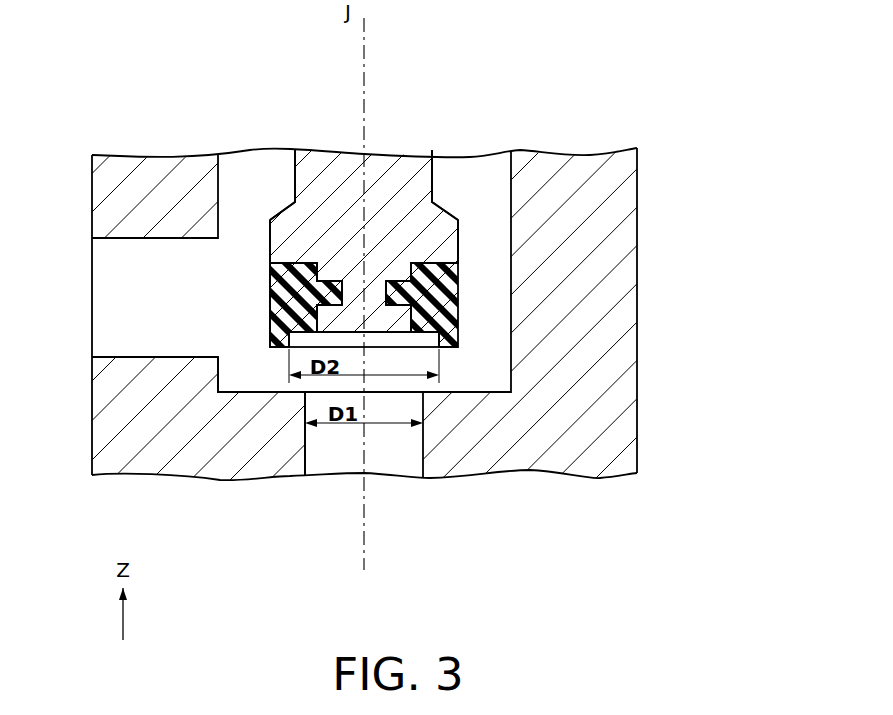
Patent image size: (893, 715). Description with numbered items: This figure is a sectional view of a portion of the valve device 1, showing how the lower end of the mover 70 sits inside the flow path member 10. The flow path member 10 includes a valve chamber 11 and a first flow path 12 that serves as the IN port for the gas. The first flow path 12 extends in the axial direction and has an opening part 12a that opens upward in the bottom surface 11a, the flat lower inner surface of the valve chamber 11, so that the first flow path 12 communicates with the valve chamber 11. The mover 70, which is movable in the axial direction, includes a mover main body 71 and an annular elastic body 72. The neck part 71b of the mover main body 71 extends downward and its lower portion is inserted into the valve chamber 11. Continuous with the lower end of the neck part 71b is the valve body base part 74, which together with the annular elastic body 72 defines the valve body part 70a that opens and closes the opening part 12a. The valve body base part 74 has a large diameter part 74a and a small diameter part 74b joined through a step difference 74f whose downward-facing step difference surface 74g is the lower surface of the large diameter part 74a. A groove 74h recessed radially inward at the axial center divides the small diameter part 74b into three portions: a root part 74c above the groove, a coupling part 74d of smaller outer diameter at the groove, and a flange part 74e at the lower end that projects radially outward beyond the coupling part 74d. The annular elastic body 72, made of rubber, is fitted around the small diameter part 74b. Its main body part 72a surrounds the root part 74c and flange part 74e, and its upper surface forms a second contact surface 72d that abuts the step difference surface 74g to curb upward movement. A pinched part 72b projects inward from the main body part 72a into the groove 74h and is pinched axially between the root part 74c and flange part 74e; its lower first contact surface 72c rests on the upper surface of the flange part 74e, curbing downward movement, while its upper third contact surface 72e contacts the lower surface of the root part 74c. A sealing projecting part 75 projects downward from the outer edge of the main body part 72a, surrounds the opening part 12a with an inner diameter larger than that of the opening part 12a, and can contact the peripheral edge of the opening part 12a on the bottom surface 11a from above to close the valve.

The valve device 1 is at (600, 70).
The flow path member 10 is at (641, 165).
The valve chamber 11 is at (511, 208).
The bottom surface 11a is at (257, 392).
The first flow path 12 is at (423, 472).
The opening part 12a is at (305, 416).
The mover 70 is at (272, 166).
The valve body part 70a is at (400, 293).
The mover main body 71 is at (426, 152).
The neck part 71b is at (432, 183).
The annular elastic body 72 is at (461, 320).
The main body part 72a is at (425, 261).
The pinched part 72b is at (397, 285).
The first contact surface 72c is at (270, 342).
The second contact surface 72d is at (295, 261).
The third contact surface 72e is at (333, 279).
The valve body base part 74 is at (683, 225).
The large diameter part 74a is at (444, 251).
The small diameter part 74b is at (412, 315).
The root part 74c is at (272, 287).
The coupling part 74d is at (270, 321).
The flange part 74e is at (398, 324).
The step difference 74f is at (258, 264).
The step difference surface 74g is at (275, 266).
The groove 74h is at (384, 296).
The sealing projecting part 75 is at (289, 346).